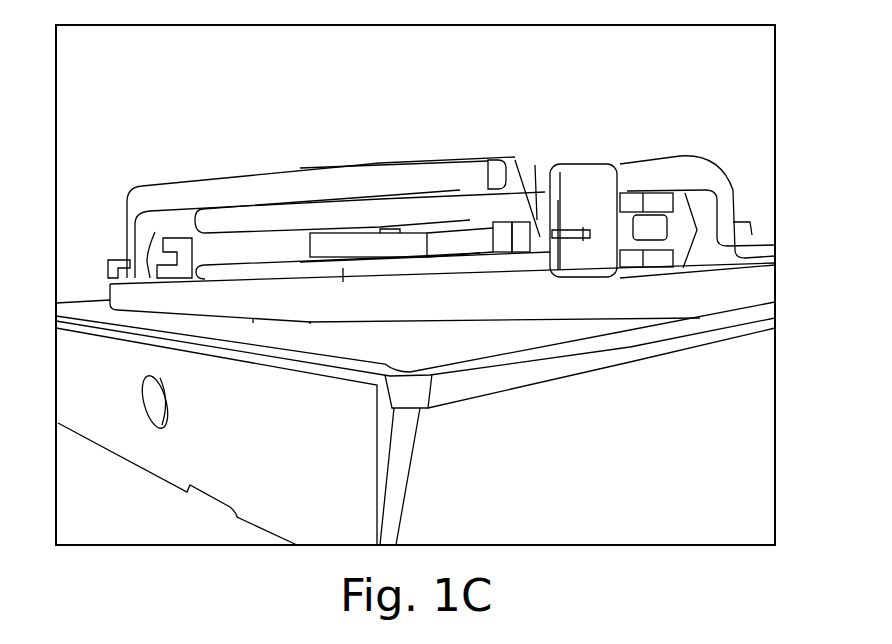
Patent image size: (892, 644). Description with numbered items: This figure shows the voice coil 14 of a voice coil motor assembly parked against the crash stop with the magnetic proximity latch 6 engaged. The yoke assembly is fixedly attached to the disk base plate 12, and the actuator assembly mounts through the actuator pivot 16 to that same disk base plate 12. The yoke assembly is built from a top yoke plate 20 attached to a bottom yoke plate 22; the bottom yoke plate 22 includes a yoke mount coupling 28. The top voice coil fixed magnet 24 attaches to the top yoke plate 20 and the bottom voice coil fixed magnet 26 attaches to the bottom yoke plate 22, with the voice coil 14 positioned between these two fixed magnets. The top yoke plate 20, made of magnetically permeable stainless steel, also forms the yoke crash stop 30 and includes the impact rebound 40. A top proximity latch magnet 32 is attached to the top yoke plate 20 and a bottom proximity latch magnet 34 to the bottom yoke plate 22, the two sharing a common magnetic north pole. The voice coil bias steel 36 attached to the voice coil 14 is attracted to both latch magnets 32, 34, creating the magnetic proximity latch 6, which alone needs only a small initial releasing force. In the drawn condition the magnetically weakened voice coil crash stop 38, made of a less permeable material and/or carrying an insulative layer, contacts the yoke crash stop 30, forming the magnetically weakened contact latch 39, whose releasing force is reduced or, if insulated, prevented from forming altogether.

The magnetic proximity latch 6 is at (700, 230).
The disk base plate 12 is at (540, 345).
The voice coil 14 is at (445, 237).
The actuator pivot 16 is at (393, 232).
The top yoke plate 20 is at (267, 187).
The bottom yoke plate 22 is at (770, 275).
The top voice coil fixed magnet 24 is at (238, 220).
The bottom voice coil fixed magnet 26 is at (217, 275).
The yoke mount coupling 28 is at (285, 322).
The yoke crash stop 30 is at (560, 222).
The top proximity latch magnet 32 is at (657, 202).
The bottom proximity latch magnet 34 is at (660, 263).
The voice coil bias steel 36 is at (650, 227).
The magnetically weakened voice coil crash stop 38 is at (512, 190).
The magnetically weakened contact latch 39 is at (540, 237).
The impact rebound 40 is at (148, 245).